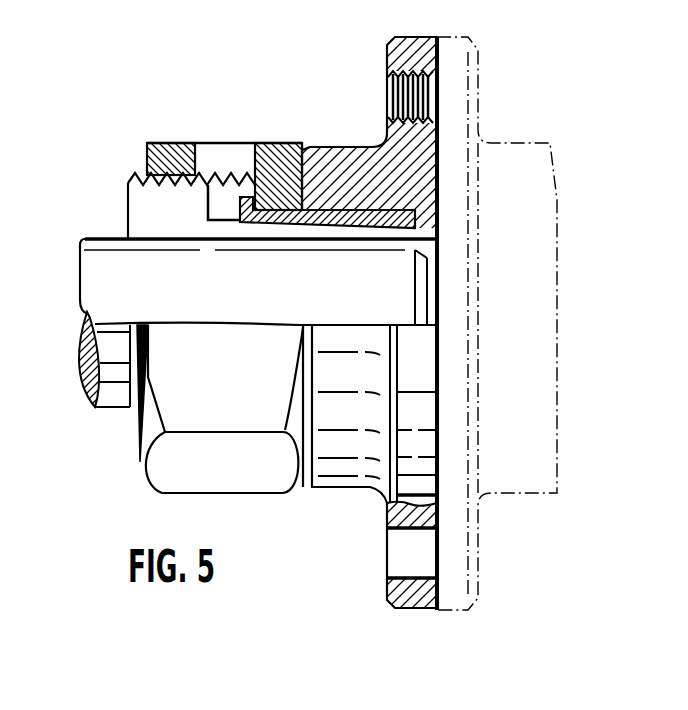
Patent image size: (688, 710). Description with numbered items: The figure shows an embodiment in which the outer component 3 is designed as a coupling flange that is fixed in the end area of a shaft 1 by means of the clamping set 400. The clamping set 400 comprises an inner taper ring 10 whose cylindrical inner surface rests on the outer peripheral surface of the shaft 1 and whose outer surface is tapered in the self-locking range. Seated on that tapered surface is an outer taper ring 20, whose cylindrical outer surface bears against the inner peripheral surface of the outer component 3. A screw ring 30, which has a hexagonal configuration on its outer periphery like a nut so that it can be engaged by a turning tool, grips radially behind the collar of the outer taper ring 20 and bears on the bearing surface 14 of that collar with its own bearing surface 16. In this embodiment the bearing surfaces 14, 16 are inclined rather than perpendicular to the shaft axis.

The shaft 1 is at (401, 283).
The outer component 3 is at (425, 43).
The inner taper ring 10 is at (118, 222).
The bearing surface 14 is at (302, 148).
The bearing surface 16 is at (257, 228).
The outer taper ring 20 is at (388, 197).
The screw ring 30 is at (291, 128).
The clamping set 400 is at (182, 128).